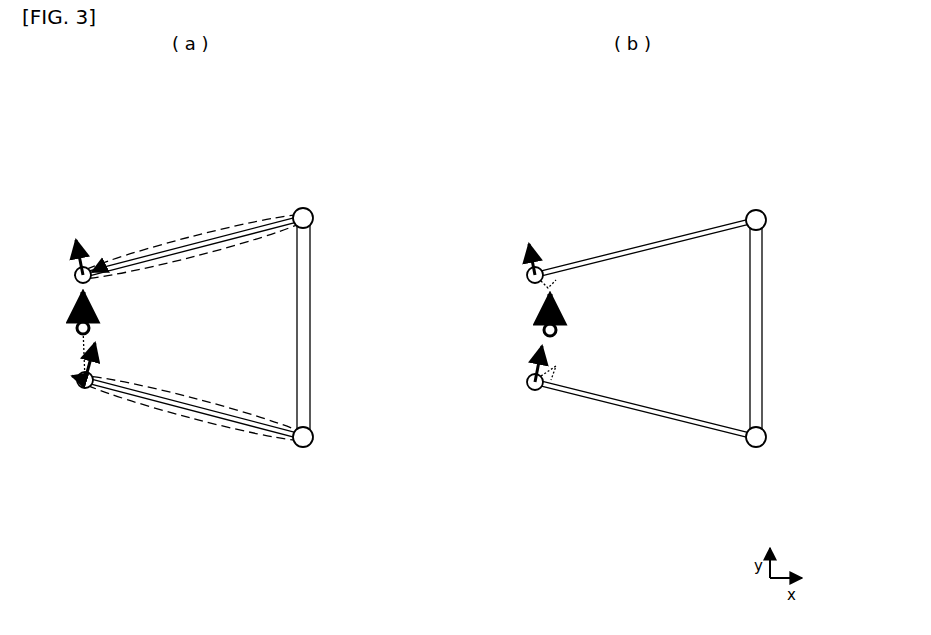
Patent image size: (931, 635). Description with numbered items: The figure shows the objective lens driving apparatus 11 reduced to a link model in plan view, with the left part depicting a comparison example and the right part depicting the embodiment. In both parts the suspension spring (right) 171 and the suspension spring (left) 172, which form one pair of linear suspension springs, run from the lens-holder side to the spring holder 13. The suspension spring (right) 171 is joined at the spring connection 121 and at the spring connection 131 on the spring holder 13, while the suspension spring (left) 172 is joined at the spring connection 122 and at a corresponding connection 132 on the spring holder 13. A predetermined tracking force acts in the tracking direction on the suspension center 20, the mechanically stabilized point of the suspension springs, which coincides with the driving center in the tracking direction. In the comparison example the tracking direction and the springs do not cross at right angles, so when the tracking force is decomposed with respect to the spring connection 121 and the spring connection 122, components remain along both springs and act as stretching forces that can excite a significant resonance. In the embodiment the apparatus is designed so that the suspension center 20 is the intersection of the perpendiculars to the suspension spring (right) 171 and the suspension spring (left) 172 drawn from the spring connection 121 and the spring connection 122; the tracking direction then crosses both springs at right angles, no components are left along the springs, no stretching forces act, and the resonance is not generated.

The objective lens driving apparatus 11 is at (54, 152).
The spring connection 121 is at (75, 271).
The spring connection 122 is at (78, 381).
The suspension center 20 is at (77, 327).
The suspension spring (right) 171 is at (268, 212).
The suspension spring (left) 172 is at (274, 444).
The spring connection 131 is at (313, 214).
The fourth joint 132 is at (313, 434).
The spring holder 13 is at (763, 320).